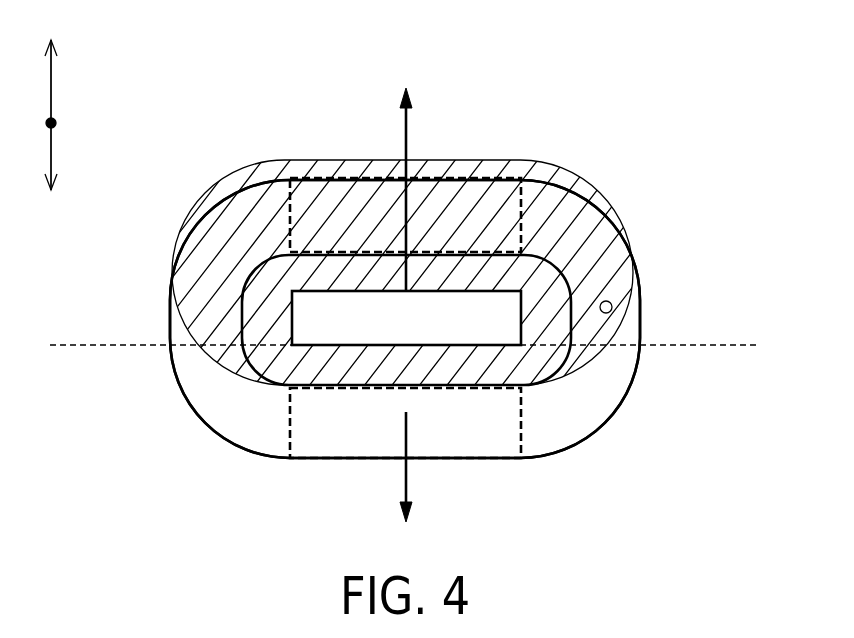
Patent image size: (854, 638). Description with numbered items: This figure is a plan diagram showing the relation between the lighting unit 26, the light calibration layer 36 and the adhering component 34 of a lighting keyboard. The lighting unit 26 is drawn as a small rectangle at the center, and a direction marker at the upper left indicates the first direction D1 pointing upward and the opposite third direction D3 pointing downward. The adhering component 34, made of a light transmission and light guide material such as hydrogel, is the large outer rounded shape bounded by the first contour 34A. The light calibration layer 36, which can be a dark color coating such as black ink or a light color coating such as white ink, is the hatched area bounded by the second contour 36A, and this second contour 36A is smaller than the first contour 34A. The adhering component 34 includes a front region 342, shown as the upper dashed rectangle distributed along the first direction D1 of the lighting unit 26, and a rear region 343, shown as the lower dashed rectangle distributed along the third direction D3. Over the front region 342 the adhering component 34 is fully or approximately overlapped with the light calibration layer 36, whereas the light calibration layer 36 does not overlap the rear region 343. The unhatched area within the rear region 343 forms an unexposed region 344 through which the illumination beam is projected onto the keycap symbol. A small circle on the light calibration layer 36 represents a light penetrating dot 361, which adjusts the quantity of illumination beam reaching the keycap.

The lighting unit 26 is at (310, 320).
The adhering component 34 is at (197, 376).
The first contour 34A is at (613, 415).
The light calibration layer 36 is at (502, 172).
The second contour 36A is at (563, 168).
The front region 342 is at (522, 208).
The rear region 343 is at (522, 412).
The unexposed region 344 is at (340, 423).
The light penetrating dot 361 is at (612, 306).
The first direction D1 is at (50, 97).
The third direction D3 is at (50, 132).